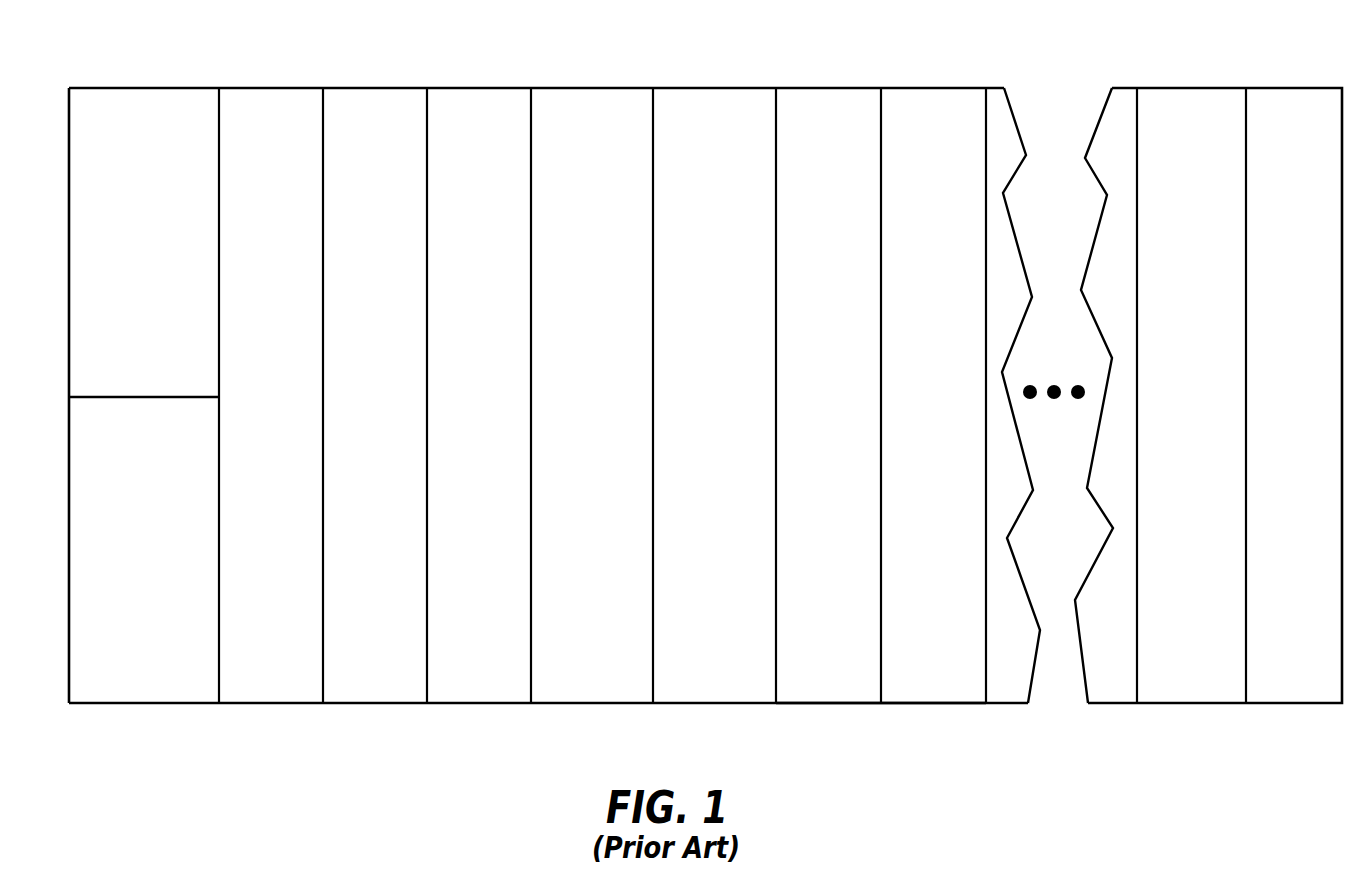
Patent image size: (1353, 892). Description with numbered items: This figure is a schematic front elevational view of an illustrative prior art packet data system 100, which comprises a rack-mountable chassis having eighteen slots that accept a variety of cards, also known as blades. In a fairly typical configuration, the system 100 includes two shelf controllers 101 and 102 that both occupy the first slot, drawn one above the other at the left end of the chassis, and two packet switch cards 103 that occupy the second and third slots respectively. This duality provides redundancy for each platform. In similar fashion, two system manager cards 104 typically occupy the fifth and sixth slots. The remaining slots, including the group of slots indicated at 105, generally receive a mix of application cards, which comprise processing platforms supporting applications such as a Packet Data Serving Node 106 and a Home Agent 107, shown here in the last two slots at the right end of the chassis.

The packet data system 100 is at (682, 769).
The shelf controller 101 is at (69, 238).
The shelf controller 102 is at (69, 548).
The packet switch cards 103 is at (378, 88).
The system manager cards 104 is at (710, 88).
The slots 105 is at (1023, 84).
The Packet Data Serving Node 106 is at (1185, 86).
The Home Agent 107 is at (1288, 86).